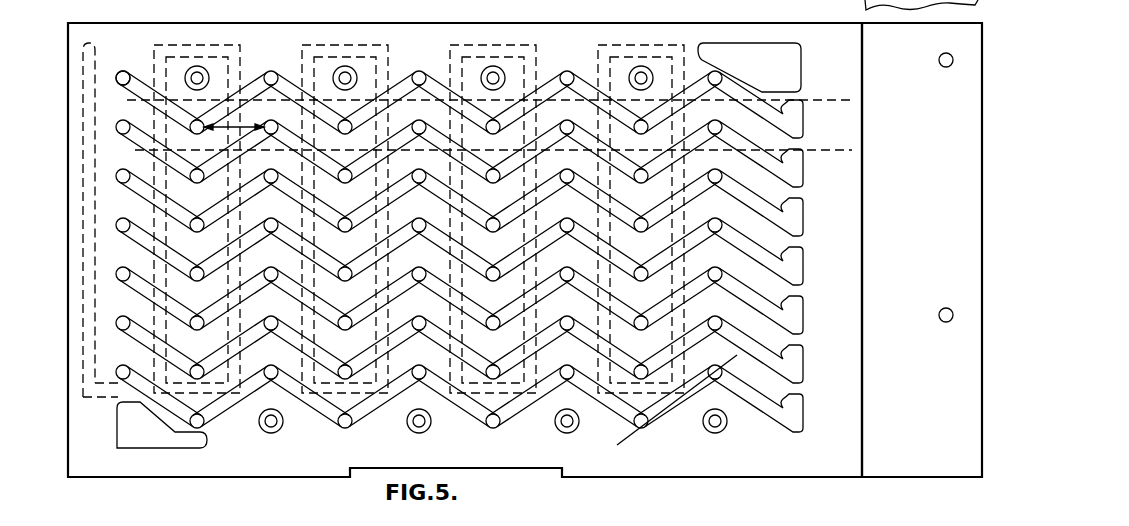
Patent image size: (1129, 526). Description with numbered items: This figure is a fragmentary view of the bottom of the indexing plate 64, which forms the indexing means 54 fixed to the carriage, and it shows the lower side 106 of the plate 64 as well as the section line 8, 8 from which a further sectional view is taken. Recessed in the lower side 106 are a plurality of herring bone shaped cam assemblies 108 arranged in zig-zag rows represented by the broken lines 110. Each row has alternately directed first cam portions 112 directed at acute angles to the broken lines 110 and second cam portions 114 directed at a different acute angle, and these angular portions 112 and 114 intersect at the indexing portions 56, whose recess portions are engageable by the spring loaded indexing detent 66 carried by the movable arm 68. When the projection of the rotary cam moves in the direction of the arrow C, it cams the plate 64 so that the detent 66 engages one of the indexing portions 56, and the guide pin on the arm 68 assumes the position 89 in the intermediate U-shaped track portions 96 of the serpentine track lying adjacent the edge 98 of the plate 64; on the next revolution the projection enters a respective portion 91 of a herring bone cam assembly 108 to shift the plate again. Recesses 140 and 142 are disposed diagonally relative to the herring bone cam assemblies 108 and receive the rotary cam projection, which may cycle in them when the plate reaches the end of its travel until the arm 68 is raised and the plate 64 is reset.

The section line 8- 8 is at (660, 458).
The indexing means 54 is at (715, 479).
The indexing portions 56 is at (576, 368).
The plate 64 is at (572, 478).
The indexing detent 66 is at (188, 6).
The movable arm 68 is at (162, 525).
The guide pin position 89 is at (126, 6).
The herring bone cam portion 91 is at (124, 70).
The intermediate U-shaped track portions 96 is at (224, 1).
The edge of the plate 98 is at (508, 0).
The lower side 106 is at (850, 282).
The herring bone shaped cam assemblies 108 is at (605, 36).
The broken lines 110 is at (843, 148).
The first cam portions 112 is at (118, 196).
The second cam portions 114 is at (250, 163).
The recess 140 is at (120, 418).
The recess 142 is at (790, 56).
The arrow C is at (234, 149).